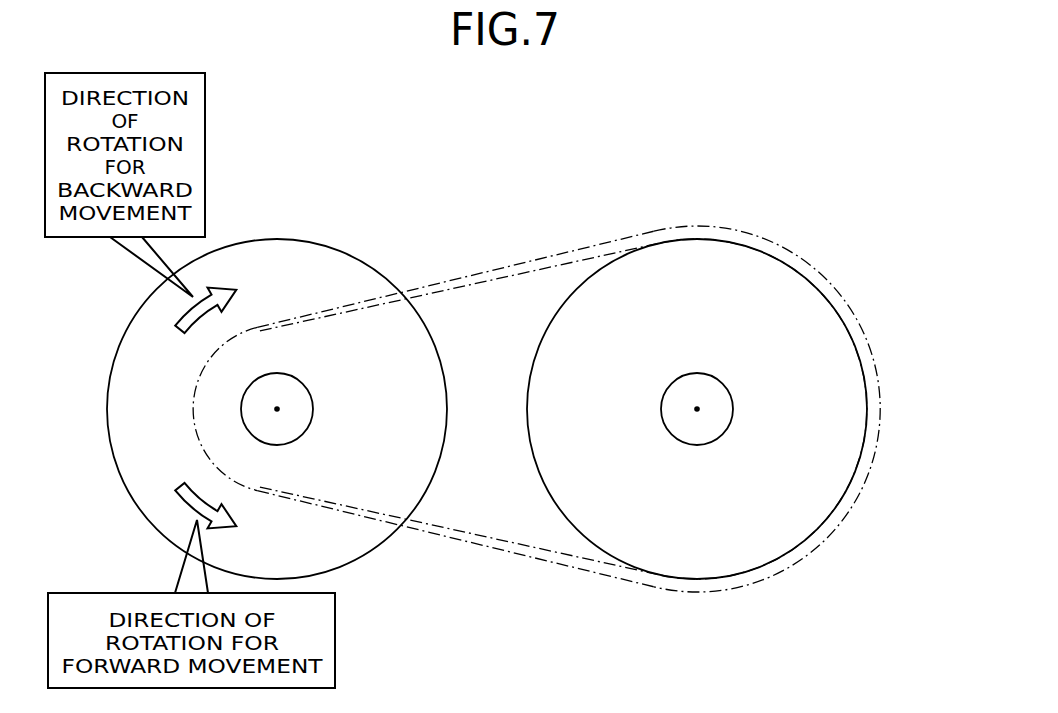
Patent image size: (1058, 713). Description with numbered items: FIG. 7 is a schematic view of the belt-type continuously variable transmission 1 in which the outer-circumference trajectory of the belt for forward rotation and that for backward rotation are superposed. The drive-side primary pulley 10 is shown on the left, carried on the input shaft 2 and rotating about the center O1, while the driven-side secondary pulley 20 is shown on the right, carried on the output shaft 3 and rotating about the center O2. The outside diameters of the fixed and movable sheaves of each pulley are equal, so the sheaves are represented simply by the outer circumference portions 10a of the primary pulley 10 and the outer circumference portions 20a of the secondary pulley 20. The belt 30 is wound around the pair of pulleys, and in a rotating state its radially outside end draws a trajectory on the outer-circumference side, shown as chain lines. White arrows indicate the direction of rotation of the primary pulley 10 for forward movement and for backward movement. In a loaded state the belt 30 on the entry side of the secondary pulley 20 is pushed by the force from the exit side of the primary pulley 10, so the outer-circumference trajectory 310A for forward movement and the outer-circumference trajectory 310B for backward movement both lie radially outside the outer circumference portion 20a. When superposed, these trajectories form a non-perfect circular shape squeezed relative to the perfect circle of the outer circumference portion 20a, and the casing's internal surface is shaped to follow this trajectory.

The belt-type continuously variable transmission 1 is at (561, 153).
The primary pulley 10 is at (362, 215).
The outer circumference portions of the primary pulley 10a is at (384, 274).
The input shaft 2 is at (292, 443).
The rotation center of first pulley O1 is at (277, 409).
The secondary pulley 20 is at (783, 218).
The outer circumference portions of the secondary pulley 20a is at (868, 409).
The output shaft 3 is at (712, 443).
The rotation center of second pulley O2 is at (697, 409).
The belt 30 is at (565, 236).
The outer-circumference trajectory for backward movement 310B is at (509, 266).
The outer-circumference trajectory for forward movement 310A is at (510, 553).